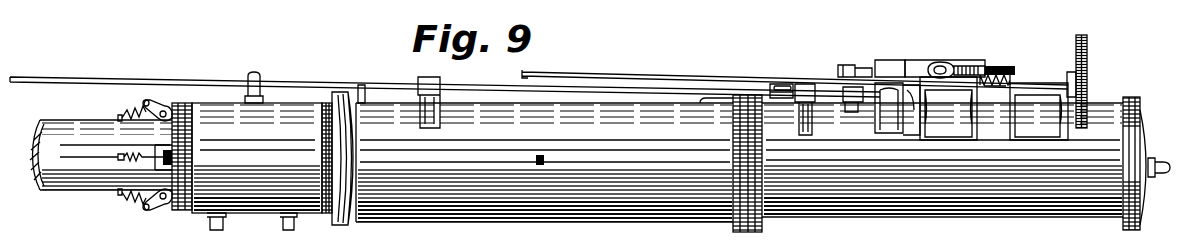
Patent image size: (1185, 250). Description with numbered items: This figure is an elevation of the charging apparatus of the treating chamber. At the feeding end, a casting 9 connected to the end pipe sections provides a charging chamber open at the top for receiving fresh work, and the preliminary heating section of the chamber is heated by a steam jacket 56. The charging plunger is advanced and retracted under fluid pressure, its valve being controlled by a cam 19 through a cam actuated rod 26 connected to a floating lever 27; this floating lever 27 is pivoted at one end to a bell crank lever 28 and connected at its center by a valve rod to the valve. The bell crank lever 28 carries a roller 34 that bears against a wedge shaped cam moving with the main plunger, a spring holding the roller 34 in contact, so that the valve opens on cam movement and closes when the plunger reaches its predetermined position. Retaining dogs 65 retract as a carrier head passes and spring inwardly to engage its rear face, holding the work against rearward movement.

The casting 9 is at (665, 118).
The cam 19 is at (985, 78).
The cam actuated rod 26 is at (874, 75).
The floating lever 27 is at (860, 76).
The bell crank lever 28 is at (820, 90).
The roller 34 is at (780, 88).
The steam jacket 56 is at (285, 108).
The retaining dogs 65 is at (160, 98).